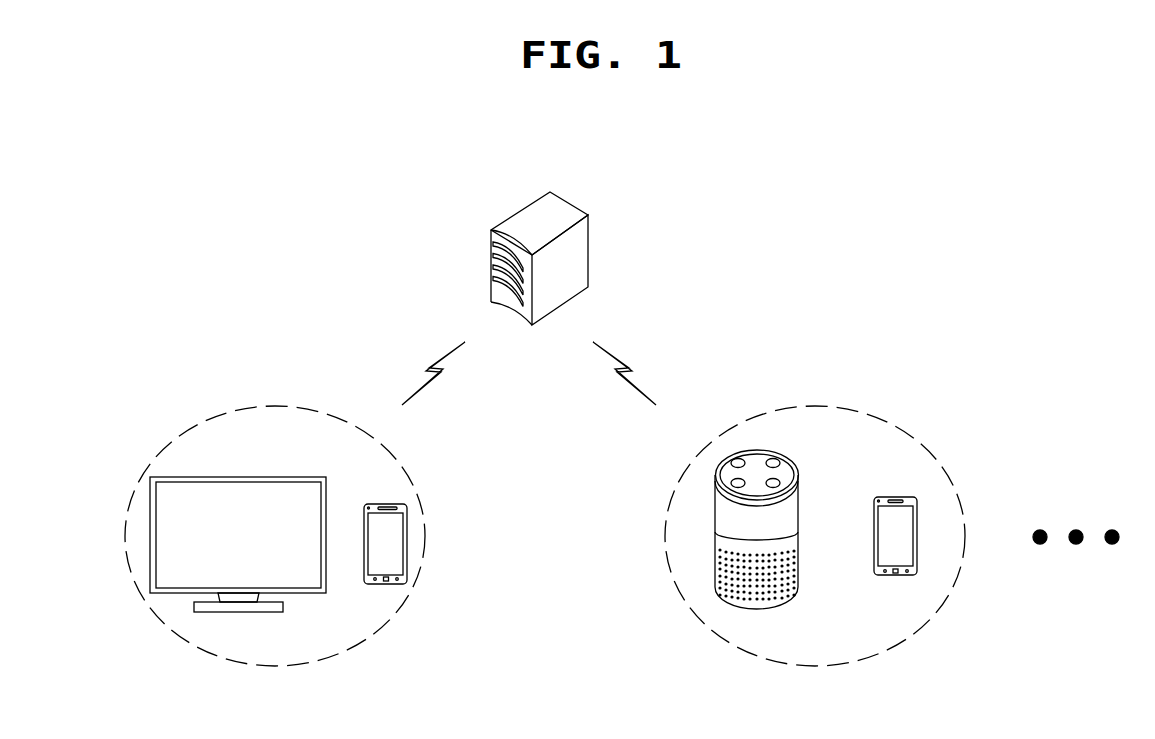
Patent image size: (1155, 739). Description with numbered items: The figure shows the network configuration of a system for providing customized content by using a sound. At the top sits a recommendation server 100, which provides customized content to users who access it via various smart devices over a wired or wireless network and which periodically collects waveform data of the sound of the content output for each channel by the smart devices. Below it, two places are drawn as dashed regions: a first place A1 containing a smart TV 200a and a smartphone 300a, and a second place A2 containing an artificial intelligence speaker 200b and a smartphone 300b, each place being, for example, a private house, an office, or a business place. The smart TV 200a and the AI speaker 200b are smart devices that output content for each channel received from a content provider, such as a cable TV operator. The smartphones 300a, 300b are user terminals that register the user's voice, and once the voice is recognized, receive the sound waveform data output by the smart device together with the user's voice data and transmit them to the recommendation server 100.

The recommendation server 100 is at (592, 250).
The first place A1 is at (410, 478).
The second place A2 is at (950, 477).
The smart TV 200a is at (230, 612).
The artificial intelligence (AI) speaker 200b is at (750, 608).
The smartphone 300a is at (386, 585).
The smartphone 300b is at (895, 577).